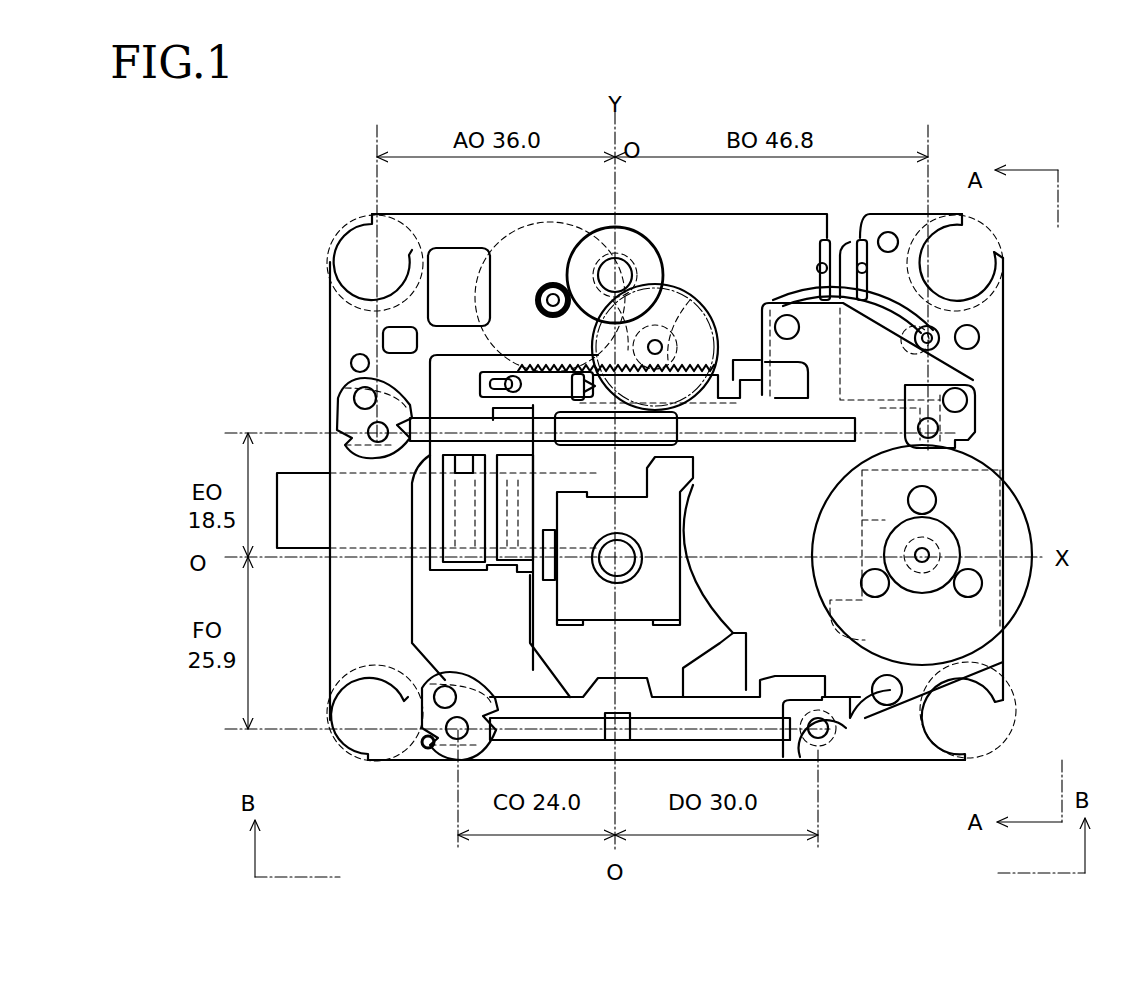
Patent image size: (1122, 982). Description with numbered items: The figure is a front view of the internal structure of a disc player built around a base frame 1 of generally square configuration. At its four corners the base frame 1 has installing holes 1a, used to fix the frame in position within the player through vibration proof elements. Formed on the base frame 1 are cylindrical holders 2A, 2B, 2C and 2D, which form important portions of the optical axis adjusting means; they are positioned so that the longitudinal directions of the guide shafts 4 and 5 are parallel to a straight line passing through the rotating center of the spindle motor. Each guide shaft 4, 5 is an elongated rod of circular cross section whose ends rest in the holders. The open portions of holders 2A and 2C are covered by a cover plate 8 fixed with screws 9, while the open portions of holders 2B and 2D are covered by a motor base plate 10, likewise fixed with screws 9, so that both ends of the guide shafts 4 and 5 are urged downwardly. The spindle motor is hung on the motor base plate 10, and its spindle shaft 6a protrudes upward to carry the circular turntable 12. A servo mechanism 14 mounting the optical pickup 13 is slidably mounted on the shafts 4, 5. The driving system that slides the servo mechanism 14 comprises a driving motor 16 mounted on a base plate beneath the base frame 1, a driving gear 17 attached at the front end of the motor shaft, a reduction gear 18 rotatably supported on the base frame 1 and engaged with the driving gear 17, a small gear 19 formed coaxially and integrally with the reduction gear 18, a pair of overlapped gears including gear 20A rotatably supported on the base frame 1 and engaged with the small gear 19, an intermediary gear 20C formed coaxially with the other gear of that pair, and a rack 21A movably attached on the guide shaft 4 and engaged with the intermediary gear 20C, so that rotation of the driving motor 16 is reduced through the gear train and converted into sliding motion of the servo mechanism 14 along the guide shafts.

The base frame 1 is at (768, 230).
The installing holes 1a is at (360, 240).
The cylindrical holder 2A is at (318, 407).
The cylindrical holder 2B is at (985, 421).
The cylindrical holder 2C is at (415, 775).
The cylindrical holder 2D is at (840, 765).
The guide shaft 4 is at (802, 440).
The guide shaft 5 is at (752, 700).
The spindle shaft 6a is at (925, 565).
The cover plate 8 is at (358, 385).
The fixing screws 9 is at (366, 396).
The motor base plate 10 is at (870, 380).
The turntable 12 is at (1013, 575).
The optical pickup 13 is at (625, 552).
The servo mechanism 14 is at (700, 617).
The driving motor 16 is at (548, 230).
The driving gear 17 is at (536, 298).
The reduction gear 18 is at (630, 240).
The small gear 19 is at (630, 273).
The gear 20A is at (676, 308).
The intermediary gear 20C is at (677, 347).
The rack 21A is at (720, 388).